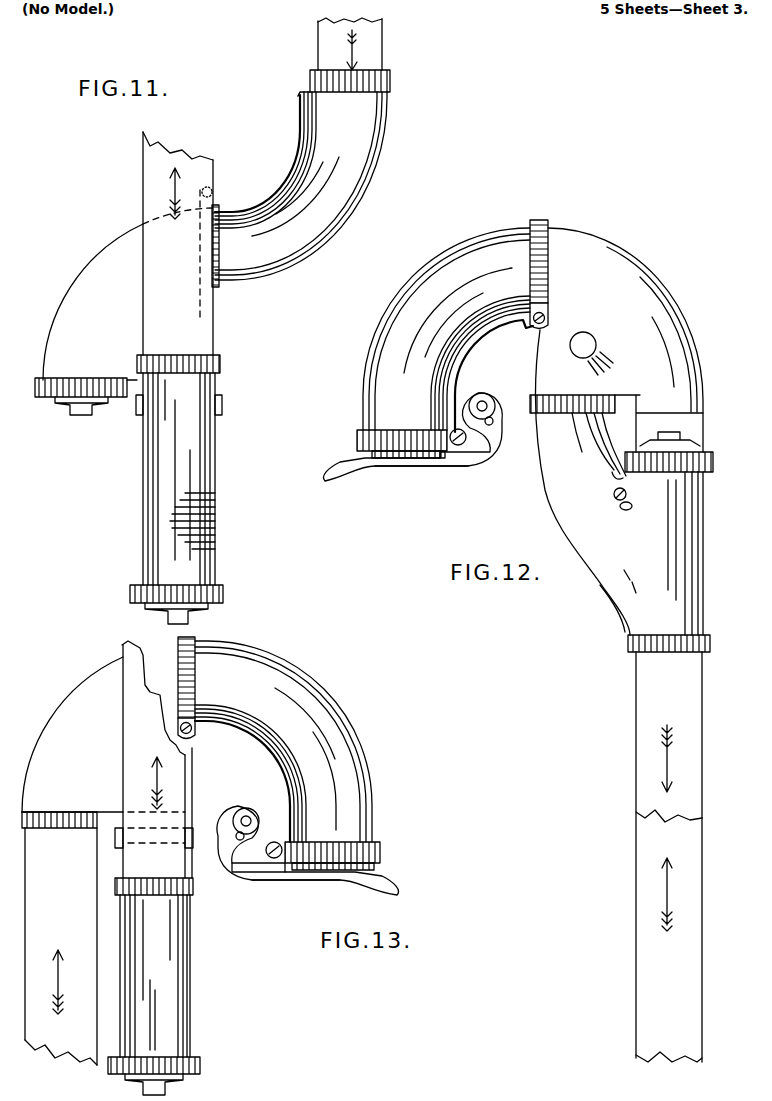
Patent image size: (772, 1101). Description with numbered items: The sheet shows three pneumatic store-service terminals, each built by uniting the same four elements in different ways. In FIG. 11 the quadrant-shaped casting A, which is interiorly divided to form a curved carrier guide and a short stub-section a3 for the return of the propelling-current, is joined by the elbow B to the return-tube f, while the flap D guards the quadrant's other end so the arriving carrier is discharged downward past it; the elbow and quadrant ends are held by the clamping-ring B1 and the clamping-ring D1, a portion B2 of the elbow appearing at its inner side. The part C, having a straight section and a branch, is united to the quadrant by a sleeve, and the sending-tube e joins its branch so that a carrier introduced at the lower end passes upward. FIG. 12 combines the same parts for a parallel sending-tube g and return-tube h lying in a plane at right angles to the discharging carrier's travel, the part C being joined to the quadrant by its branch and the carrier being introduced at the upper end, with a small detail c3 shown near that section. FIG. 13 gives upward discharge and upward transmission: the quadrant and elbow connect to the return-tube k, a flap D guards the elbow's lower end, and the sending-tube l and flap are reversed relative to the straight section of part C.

In FIG. 11, the quadrant-shaped casting A is at (128, 283).
In FIG. 13, the quadrant-shaped casting A is at (107, 767).
In FIG. 12, the quadrant-shaped casting A is at (619, 431).
In FIG. 11, the elbow B is at (301, 178).
In FIG. 13, the elbow B is at (283, 741).
In FIG. 12, the elbow B is at (446, 329).
In FIG. 13, the clamping-ring B1 is at (197, 641).
In FIG. 12, the clamping-ring B1 is at (536, 255).
In FIG. 11, the inner flange of elbow B2 is at (304, 148).
In FIG. 13, the inner flange of elbow B2 is at (268, 768).
In FIG. 12, the inner flange of elbow B2 is at (470, 338).
In FIG. 11, the part C is at (179, 470).
In FIG. 13, the part C is at (154, 942).
In FIG. 12, the part C is at (669, 562).
In FIG. 11, the flap D is at (82, 416).
In FIG. 13, the flap D is at (172, 1078).
In FIG. 12, the flap D is at (668, 446).
In FIG. 11, the clamping-ring D1 is at (40, 383).
In FIG. 13, the clamping-ring D1 is at (200, 1062).
In FIG. 12, the clamping-ring D1 is at (715, 465).
In FIG. 11, the sending-tube e is at (178, 243).
In FIG. 11, the return-tube f is at (350, 44).
In FIG. 12, the sending-tube g is at (666, 737).
In FIG. 12, the return-tube h is at (685, 420).
In FIG. 13, the return-tube k is at (59, 938).
In FIG. 13, the sending-tube l is at (153, 759).
In FIG. 12, the stub-section a3 is at (580, 354).
In FIG. 12, the screw c3 is at (619, 510).